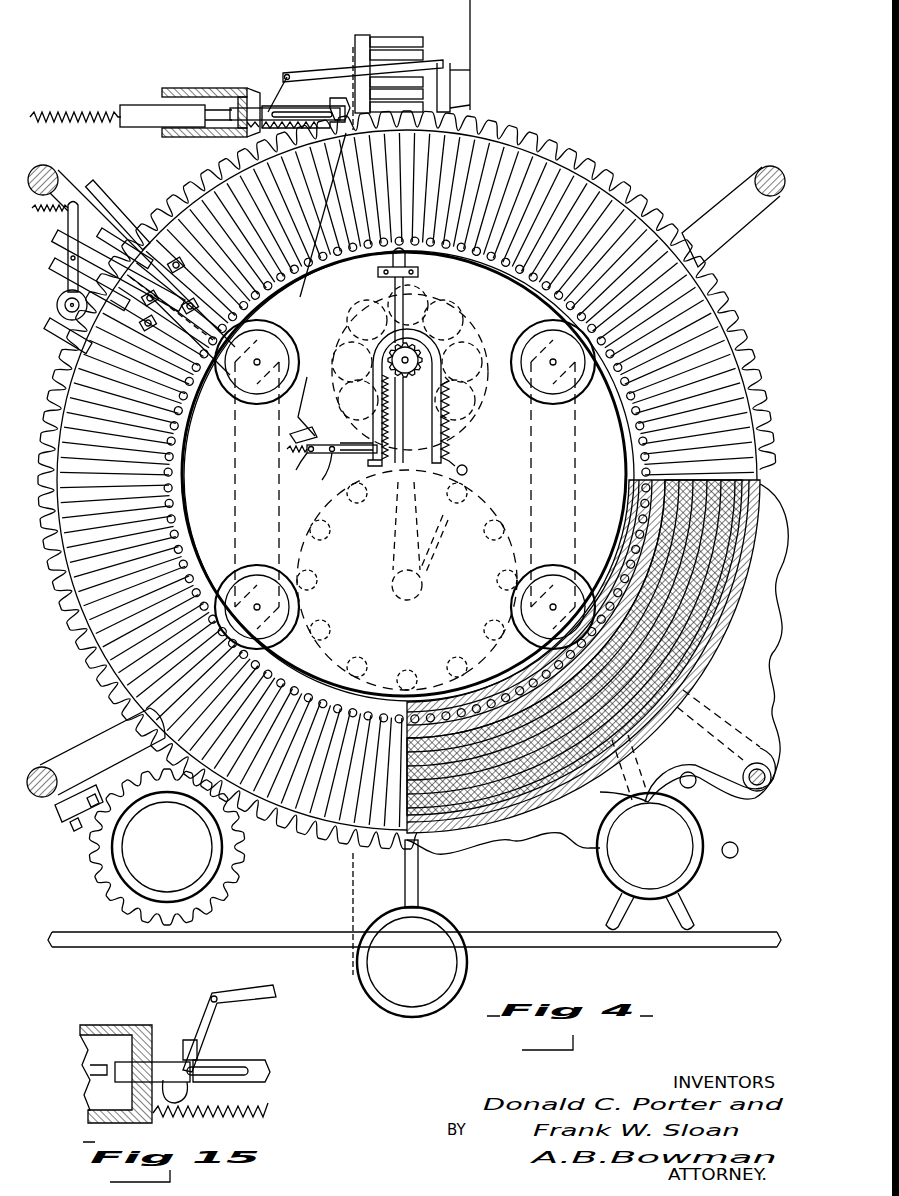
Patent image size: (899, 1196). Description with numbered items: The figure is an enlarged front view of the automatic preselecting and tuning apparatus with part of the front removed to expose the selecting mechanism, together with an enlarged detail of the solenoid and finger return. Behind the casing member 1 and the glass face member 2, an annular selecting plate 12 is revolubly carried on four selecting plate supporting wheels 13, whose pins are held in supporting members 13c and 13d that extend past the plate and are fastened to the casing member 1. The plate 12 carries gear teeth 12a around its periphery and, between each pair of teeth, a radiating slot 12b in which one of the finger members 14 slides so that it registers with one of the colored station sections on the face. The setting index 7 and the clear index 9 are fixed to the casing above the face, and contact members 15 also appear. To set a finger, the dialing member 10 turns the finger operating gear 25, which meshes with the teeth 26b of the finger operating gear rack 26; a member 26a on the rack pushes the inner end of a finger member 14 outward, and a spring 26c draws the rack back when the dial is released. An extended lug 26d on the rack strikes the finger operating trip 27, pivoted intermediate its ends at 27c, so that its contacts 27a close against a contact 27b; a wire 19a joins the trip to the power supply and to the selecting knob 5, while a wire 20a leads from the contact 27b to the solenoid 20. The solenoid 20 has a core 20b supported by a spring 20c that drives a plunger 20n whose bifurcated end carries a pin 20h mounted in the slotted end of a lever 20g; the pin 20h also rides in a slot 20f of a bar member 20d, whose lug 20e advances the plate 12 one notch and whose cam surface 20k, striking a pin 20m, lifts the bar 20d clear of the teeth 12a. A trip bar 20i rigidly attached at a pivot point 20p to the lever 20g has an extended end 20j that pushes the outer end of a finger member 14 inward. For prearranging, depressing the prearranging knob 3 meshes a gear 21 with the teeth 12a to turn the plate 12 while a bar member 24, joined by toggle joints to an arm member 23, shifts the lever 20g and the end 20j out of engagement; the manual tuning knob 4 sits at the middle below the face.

In FIG. 4, the casing member 1 is at (722, 686).
In FIG. 4, the face member 2 is at (732, 622).
In FIG. 4, the prearranging knob 3 is at (168, 880).
In FIG. 4, the manual tuning knob 4 is at (396, 986).
In FIG. 4, the selecting knob 5 is at (478, 18).
In FIG. 4, the setting index 7 is at (517, 582).
In FIG. 4, the clear index 9 is at (400, 224).
In FIG. 4, the dialing member 10 is at (470, 311).
In FIG. 4, the selecting plate 12 is at (248, 47).
In FIG. 4, the gear teeth 12a is at (616, 200).
In FIG. 4, the radiating slots 12b is at (248, 387).
In FIG. 4, the selecting plate supporting wheels 13 is at (246, 400).
In FIG. 4, the supporting member 13c is at (742, 195).
In FIG. 4, the supporting member 13d is at (70, 192).
In FIG. 4, the finger members 14 is at (75, 242).
In FIG. 4, the contact members 15 is at (414, 56).
In FIG. 4, the wire 19a is at (332, 455).
In FIG. 4, the solenoid 20 is at (210, 86).
In FIG. 15, the solenoid 20 is at (110, 1024).
In FIG. 4, the wire 20a is at (315, 403).
In FIG. 4, the core 20b is at (137, 106).
In FIG. 4, the spring 20c is at (72, 112).
In FIG. 4, the bar member 20d is at (303, 105).
In FIG. 15, the bar member 20d is at (270, 1068).
In FIG. 4, the lug 20e is at (278, 132).
In FIG. 4, the slot 20f is at (266, 110).
In FIG. 15, the slot 20f is at (222, 1066).
In FIG. 4, the lever 20g is at (289, 74).
In FIG. 15, the lever 20g is at (250, 996).
In FIG. 4, the pin 20h is at (252, 128).
In FIG. 15, the pin 20h is at (188, 1118).
In FIG. 4, the trip bar 20i is at (470, 70).
In FIG. 4, the extended end 20j is at (470, 105).
In FIG. 4, the cam surface 20k is at (338, 110).
In FIG. 4, the pin 20m is at (315, 224).
In FIG. 4, the plunger 20n is at (258, 107).
In FIG. 15, the plunger 20n is at (165, 1062).
In FIG. 4, the pivot point 20p is at (287, 74).
In FIG. 15, the pivot point 20p is at (210, 998).
In FIG. 4, the gear member 21 is at (222, 907).
In FIG. 4, the arm member 23 is at (74, 822).
In FIG. 4, the bar member 24 is at (362, 40).
In FIG. 4, the finger operating gear 25 is at (408, 355).
In FIG. 4, the finger operating gear rack 26 is at (370, 451).
In FIG. 4, the member 26a is at (380, 277).
In FIG. 4, the teeth 26b is at (395, 468).
In FIG. 4, the spring 26c is at (453, 449).
In FIG. 4, the extended lug 26d is at (390, 503).
In FIG. 4, the finger operating trip 27 is at (378, 458).
In FIG. 4, the contacts 27a is at (300, 458).
In FIG. 4, the contact 27b is at (287, 449).
In FIG. 4, the pivot 27c is at (312, 430).